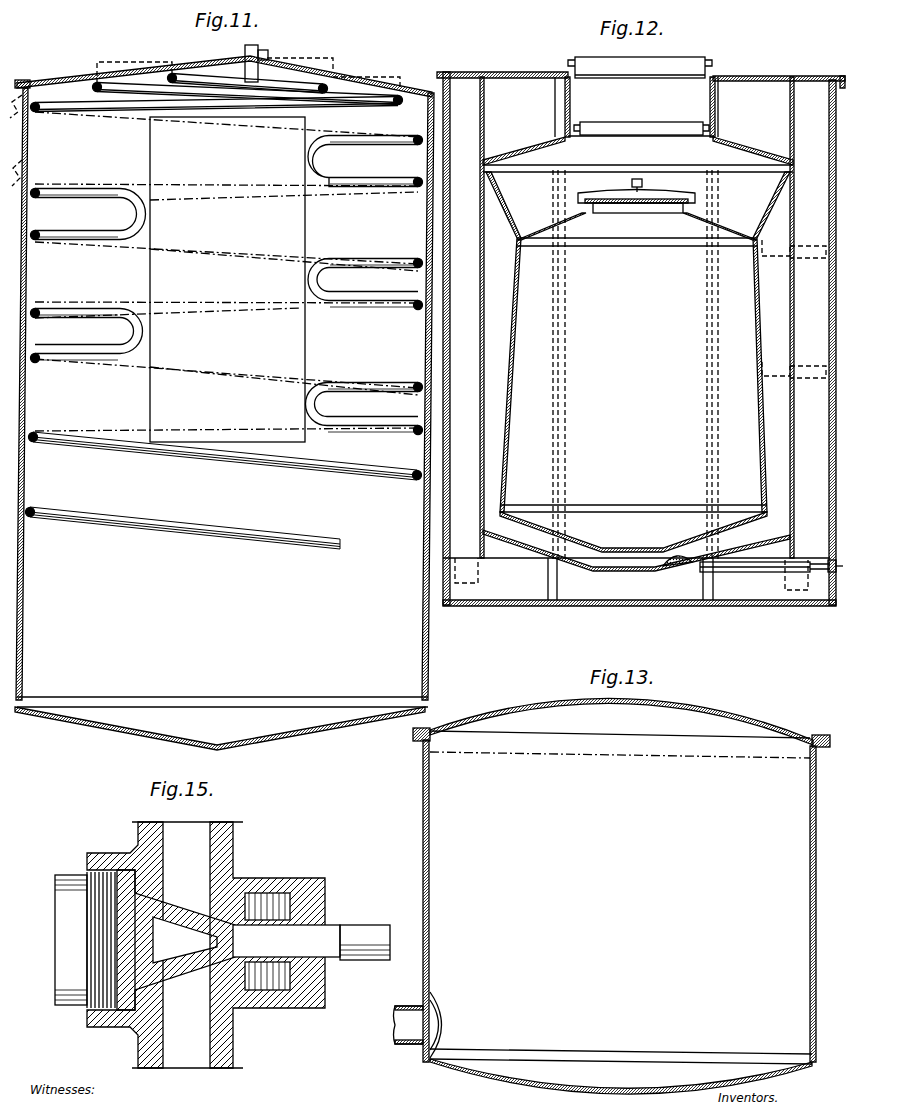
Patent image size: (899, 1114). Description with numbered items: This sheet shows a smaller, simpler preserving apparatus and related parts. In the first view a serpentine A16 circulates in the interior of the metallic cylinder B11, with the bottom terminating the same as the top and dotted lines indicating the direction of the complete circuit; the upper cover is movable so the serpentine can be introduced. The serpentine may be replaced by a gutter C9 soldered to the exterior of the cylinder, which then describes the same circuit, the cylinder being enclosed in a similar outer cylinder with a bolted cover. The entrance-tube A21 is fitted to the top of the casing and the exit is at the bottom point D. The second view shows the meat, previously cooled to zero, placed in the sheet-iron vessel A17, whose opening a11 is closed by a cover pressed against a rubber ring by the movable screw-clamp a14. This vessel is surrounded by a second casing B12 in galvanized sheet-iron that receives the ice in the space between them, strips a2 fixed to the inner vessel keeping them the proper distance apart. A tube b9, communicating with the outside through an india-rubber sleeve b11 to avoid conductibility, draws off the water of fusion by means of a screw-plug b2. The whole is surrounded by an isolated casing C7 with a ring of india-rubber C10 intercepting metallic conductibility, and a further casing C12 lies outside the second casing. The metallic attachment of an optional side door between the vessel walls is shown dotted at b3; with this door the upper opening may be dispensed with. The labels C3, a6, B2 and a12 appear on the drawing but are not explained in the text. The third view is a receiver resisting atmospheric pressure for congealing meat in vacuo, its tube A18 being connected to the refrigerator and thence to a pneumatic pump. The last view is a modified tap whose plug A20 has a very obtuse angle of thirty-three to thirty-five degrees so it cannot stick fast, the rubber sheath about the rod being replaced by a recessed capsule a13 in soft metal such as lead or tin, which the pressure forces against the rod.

In FIG. 11, the serpentine A16 is at (224, 307).
In FIG. 11, the entrance-tube A21 is at (262, 58).
In FIG. 11, the gutter C9 is at (248, 64).
In FIG. 12, the gutter C9 is at (466, 444).
In FIG. 11, the tank wall bracket C3 is at (12, 140).
In FIG. 11, the metallic cylinder B11 is at (227, 285).
In FIG. 11, the exit point D is at (228, 723).
In FIG. 12, the isolated casing C7 is at (636, 338).
In FIG. 12, the ring of india-rubber C10 is at (640, 97).
In FIG. 12, the strips a2 is at (638, 331).
In FIG. 12, the tubes a6 is at (630, 365).
In FIG. 12, the movable screw-clamp a14 is at (636, 190).
In FIG. 12, the opening a11 is at (637, 220).
In FIG. 12, the sheet-iron vessel A17 is at (633, 466).
In FIG. 12, the outer funnel B2 is at (636, 438).
In FIG. 12, the metallic attachment of the door b3 is at (776, 304).
In FIG. 12, the outer casing C12 is at (808, 312).
In FIG. 12, the second casing B12 is at (789, 513).
In FIG. 12, the tube b9 is at (677, 568).
In FIG. 12, the india-rubber sleeve b11 is at (765, 571).
In FIG. 12, the screw-plug b2 is at (836, 558).
In FIG. 13, the tube A18 is at (409, 1025).
In FIG. 13, the inner flange a12 is at (448, 1025).
In FIG. 15, the plug A20 is at (176, 940).
In FIG. 15, the recessed capsule a13 is at (311, 941).